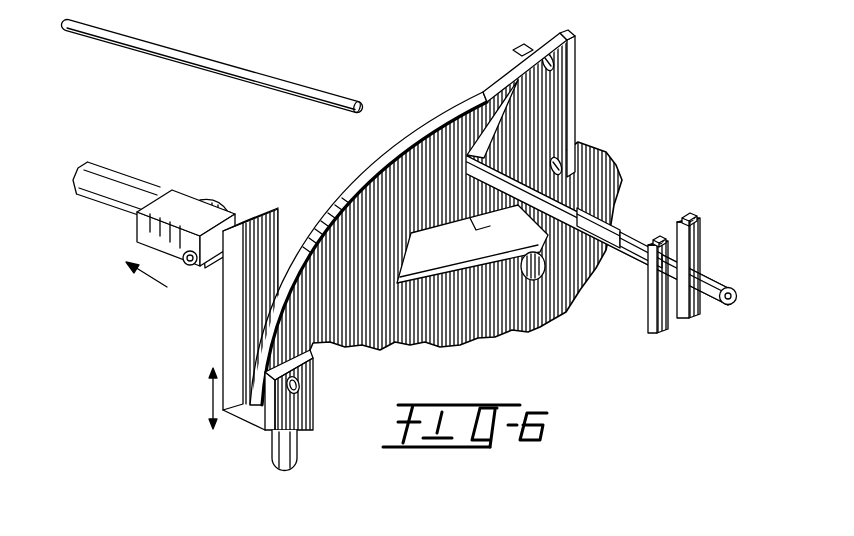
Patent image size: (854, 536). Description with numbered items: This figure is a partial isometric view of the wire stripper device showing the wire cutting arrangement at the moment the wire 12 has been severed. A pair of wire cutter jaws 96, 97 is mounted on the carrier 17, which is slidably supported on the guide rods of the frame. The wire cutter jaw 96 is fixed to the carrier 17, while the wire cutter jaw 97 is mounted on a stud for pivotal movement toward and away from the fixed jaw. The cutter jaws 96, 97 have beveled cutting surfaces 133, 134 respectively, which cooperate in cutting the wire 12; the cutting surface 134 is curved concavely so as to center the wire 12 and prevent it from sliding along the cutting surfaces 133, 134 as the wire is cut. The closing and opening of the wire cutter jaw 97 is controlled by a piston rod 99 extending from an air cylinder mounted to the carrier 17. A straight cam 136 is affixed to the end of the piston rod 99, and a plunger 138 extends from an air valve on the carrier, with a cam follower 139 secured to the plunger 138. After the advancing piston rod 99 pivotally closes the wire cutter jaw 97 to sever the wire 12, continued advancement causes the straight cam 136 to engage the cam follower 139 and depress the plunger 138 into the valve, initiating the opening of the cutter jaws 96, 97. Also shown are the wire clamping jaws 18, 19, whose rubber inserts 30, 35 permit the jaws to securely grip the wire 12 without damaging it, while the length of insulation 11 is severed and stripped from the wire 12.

The insulation 11 is at (718, 280).
The wire 12 is at (180, 66).
The carrier 17 is at (622, 195).
The wire clamping jaw 18 is at (700, 258).
The wire clamping jaw 19 is at (655, 280).
The rubber insert 30 is at (694, 220).
The rubber insert 35 is at (664, 237).
The wire cutter jaw 96 is at (570, 92).
The wire cutter jaw 97 is at (428, 110).
The piston rod 99 is at (297, 443).
The beveled cutting surface 133 is at (495, 78).
The beveled cutting surface 134 is at (500, 226).
The straight cam 136 is at (228, 302).
The plunger 138 is at (90, 183).
The cam follower 139 is at (217, 220).